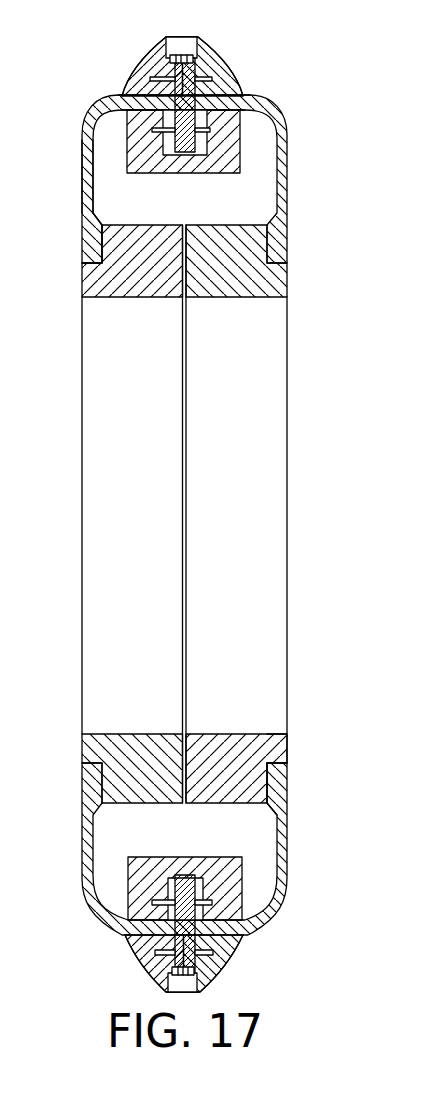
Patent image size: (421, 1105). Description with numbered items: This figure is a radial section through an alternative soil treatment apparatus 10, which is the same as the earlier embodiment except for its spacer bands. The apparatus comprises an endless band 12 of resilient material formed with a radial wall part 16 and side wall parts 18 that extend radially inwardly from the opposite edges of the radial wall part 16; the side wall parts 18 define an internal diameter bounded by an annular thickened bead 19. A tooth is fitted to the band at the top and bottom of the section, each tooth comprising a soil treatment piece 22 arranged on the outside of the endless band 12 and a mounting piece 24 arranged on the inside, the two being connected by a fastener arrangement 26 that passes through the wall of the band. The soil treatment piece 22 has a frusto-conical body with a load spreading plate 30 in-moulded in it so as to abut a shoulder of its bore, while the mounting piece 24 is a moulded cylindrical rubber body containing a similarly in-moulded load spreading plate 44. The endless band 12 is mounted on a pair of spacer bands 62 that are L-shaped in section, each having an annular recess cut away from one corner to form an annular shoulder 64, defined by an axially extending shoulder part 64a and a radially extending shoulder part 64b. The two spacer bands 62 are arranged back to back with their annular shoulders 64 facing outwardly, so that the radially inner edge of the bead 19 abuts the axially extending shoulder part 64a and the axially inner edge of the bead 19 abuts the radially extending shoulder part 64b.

The soil treatment apparatus 10 is at (284, 103).
The endless band 12 is at (287, 147).
The radial wall part 16 is at (243, 97).
The side wall parts 18 is at (82, 163).
The annular thickened bead 19 is at (82, 257).
The soil treatment piece 22 is at (218, 57).
The mounting piece 24 is at (125, 126).
The fastener arrangement 26 is at (178, 85).
The load spreading plate 30 is at (150, 78).
The load spreading plate 44 is at (153, 130).
The spacer bands 62 is at (287, 278).
The annular shoulder 64 is at (281, 754).
The axially extending shoulder part 64a is at (282, 762).
The radially extending shoulder part 64b is at (283, 800).